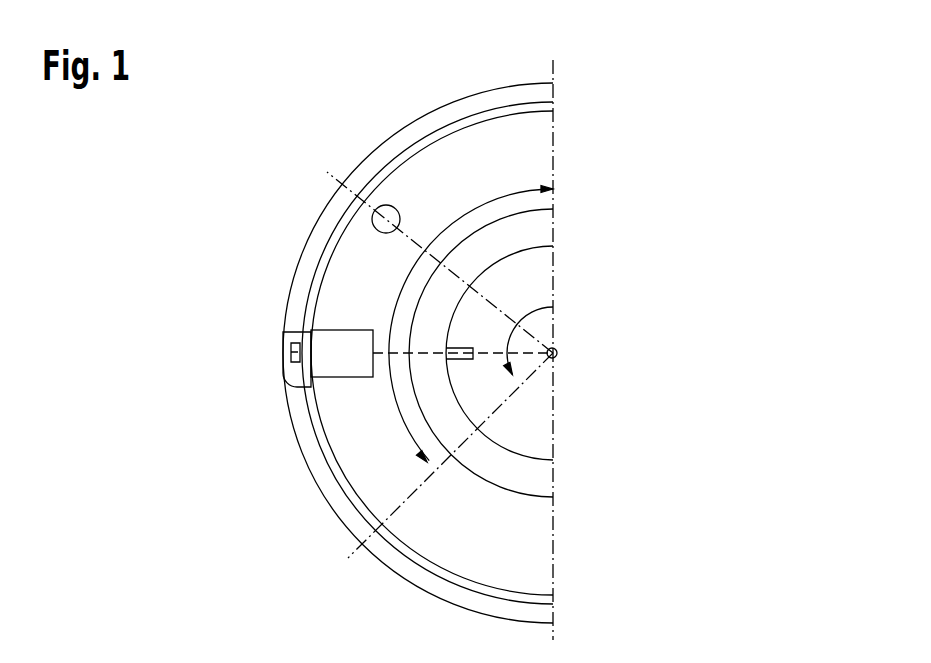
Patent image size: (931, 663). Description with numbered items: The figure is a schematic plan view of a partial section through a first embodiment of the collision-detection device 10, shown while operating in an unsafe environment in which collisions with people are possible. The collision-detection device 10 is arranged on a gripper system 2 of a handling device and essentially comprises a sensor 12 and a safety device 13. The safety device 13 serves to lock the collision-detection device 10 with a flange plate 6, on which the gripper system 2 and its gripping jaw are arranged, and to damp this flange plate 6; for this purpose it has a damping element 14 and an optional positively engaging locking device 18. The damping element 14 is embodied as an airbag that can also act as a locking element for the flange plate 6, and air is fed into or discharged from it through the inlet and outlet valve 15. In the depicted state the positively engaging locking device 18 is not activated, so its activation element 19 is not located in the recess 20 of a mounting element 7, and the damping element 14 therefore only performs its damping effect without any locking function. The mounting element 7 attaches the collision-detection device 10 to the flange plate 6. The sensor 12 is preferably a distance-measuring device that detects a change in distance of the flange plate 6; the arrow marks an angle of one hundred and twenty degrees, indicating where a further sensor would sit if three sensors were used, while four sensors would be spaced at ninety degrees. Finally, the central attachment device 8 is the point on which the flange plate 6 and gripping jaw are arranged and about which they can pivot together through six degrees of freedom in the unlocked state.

The gripper system 2 is at (693, 112).
The flange plate 6 is at (545, 173).
The mounting element 7 is at (355, 527).
The central attachment device 8 is at (558, 353).
The collision-detection device 10 is at (275, 405).
The sensor 12 is at (372, 226).
The safety device 13 is at (618, 530).
The damping element 14 is at (543, 478).
The inlet and outlet valve 15 is at (462, 362).
The positively engaging locking device 18 is at (320, 337).
The activation element 19 is at (285, 383).
The recess 20 is at (290, 348).